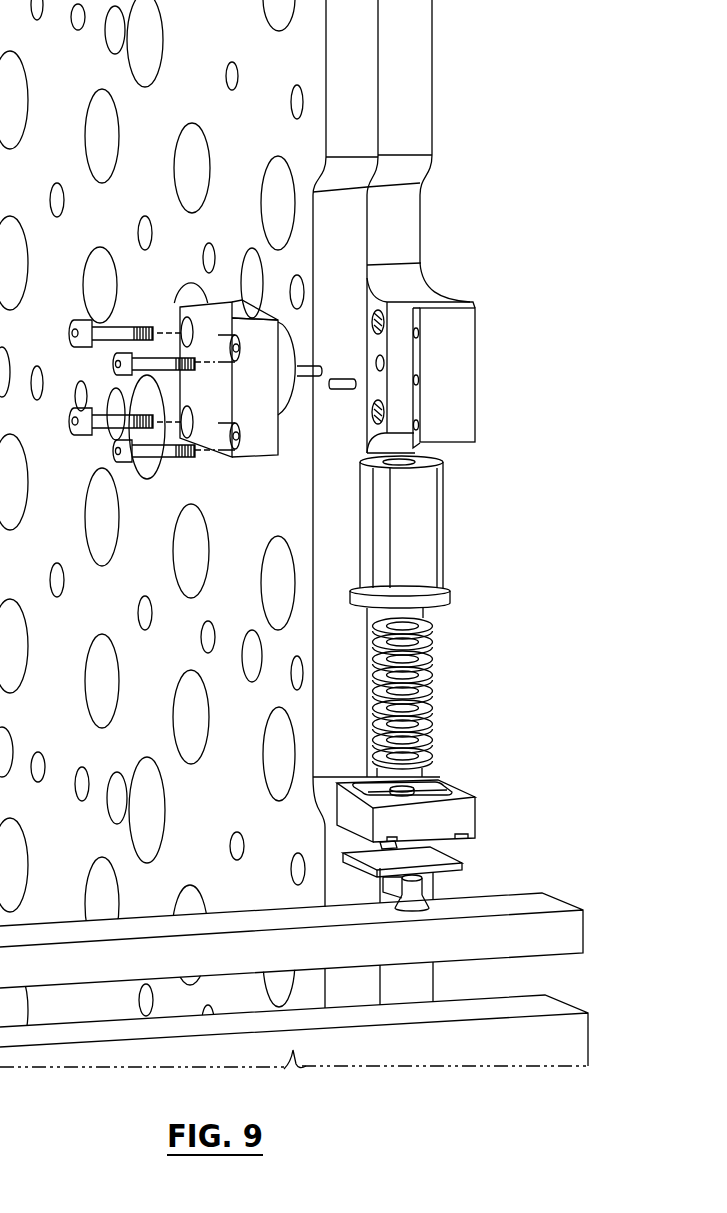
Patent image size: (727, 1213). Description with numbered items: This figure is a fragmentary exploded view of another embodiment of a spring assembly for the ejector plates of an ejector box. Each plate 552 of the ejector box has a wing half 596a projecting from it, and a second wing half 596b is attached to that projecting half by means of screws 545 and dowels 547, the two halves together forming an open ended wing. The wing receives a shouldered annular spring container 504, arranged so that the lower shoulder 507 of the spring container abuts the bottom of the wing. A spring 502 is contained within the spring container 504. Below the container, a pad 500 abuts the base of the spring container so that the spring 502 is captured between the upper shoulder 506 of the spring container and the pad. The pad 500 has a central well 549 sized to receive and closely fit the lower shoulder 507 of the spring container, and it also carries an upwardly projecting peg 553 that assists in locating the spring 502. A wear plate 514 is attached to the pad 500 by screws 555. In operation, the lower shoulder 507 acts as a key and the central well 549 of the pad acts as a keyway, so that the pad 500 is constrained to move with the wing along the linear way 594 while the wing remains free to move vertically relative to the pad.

The plate 552 is at (432, 40).
The second wing half 596b is at (222, 303).
The dowels 547 is at (306, 364).
The wing half 596a is at (474, 378).
The upper shoulder 506 is at (430, 456).
The shouldered annular spring container 504 is at (443, 537).
The lower shoulder 507 is at (452, 600).
The spring 502 is at (436, 676).
The central well 549 is at (443, 783).
The peg 553 is at (408, 793).
The pad 500 is at (510, 822).
The wear plate 514 is at (452, 877).
The linear way 594 is at (583, 927).
The screws 555 is at (412, 910).
The screws 545 is at (147, 458).